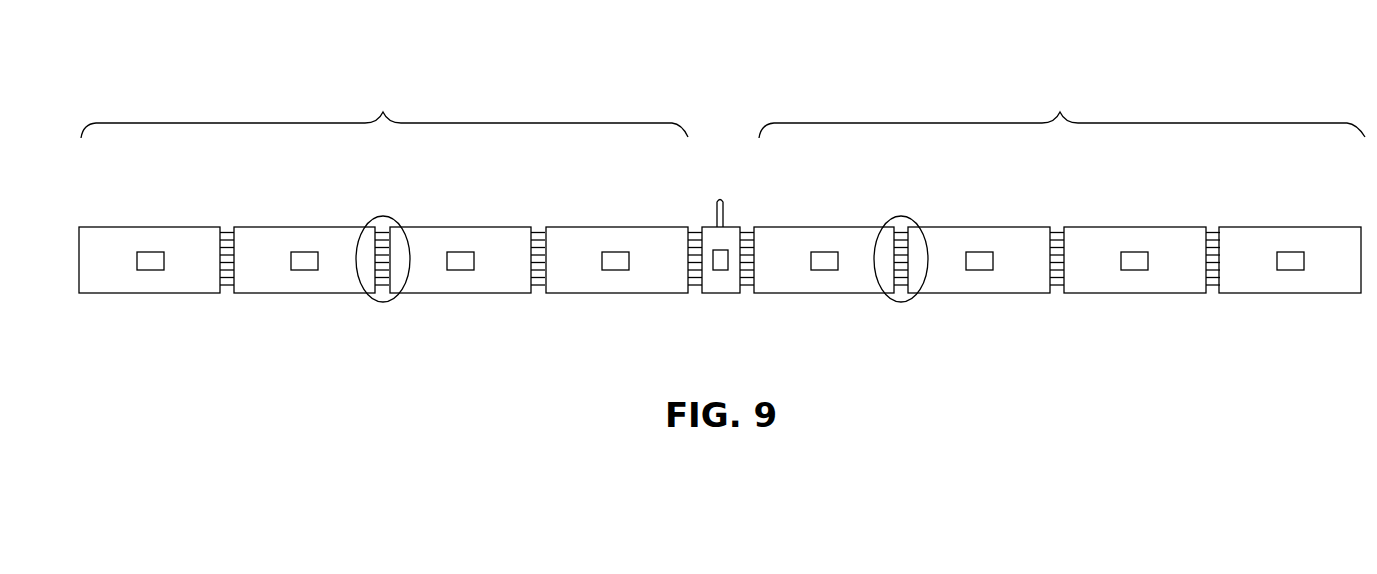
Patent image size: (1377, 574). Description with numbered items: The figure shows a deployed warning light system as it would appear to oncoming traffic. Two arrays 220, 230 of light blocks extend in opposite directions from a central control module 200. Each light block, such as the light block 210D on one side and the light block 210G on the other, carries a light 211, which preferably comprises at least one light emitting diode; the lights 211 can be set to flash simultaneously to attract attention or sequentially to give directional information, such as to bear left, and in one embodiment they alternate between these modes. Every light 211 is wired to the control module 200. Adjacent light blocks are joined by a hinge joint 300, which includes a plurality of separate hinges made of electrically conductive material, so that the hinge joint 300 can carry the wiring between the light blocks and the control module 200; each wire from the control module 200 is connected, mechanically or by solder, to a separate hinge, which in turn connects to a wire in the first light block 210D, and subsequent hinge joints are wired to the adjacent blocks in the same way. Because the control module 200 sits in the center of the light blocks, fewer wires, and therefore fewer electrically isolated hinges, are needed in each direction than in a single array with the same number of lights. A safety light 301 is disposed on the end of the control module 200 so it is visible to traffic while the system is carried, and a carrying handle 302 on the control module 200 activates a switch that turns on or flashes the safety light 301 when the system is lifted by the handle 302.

The array of light blocks 220 is at (383, 112).
The array of light blocks 230 is at (1060, 112).
The light 211 is at (150, 252).
The hinge joint 300 is at (901, 216).
The carrying handle 302 is at (720, 200).
The light block 210D is at (575, 294).
The light block 210G is at (855, 294).
The control module 200 is at (712, 294).
The safety light 301 is at (721, 271).